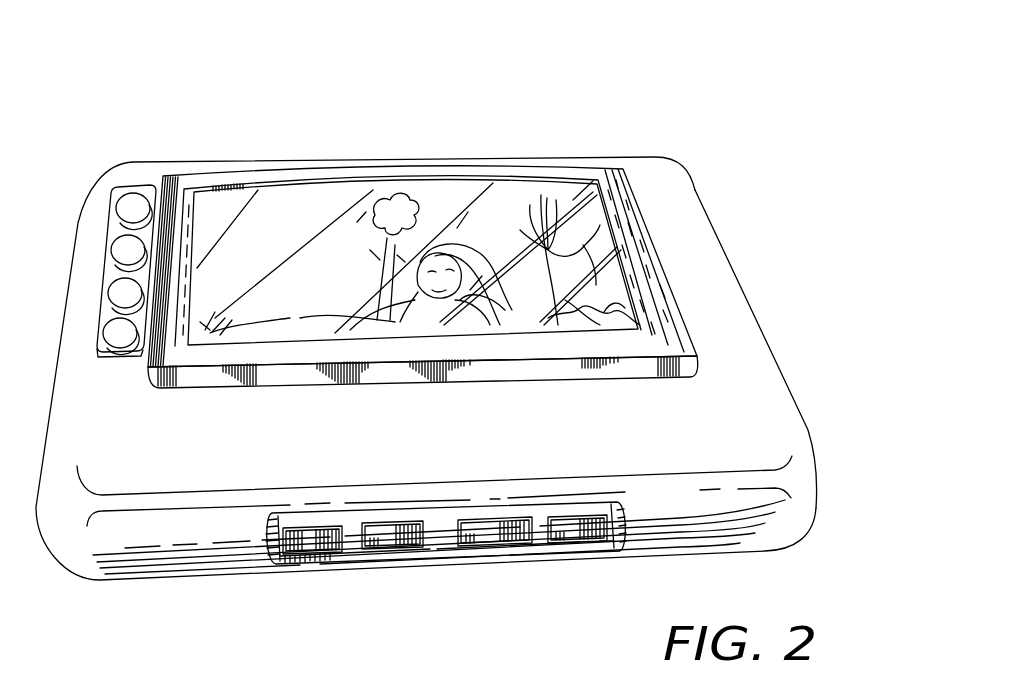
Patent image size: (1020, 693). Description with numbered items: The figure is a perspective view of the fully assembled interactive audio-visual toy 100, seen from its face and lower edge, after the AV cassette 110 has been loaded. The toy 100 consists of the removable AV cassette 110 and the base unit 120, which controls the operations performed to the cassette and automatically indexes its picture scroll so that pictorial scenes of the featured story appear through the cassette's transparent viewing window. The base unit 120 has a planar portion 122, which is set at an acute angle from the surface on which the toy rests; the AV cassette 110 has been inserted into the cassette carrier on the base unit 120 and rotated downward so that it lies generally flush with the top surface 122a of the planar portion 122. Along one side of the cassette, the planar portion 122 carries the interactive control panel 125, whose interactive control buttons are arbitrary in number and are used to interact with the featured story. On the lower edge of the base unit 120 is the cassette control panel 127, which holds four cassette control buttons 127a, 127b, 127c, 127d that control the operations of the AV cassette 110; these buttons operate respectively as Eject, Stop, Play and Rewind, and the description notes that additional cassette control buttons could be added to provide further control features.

The interactive audio-visual toy 100 is at (704, 206).
The AV cassette 110 is at (249, 183).
The base unit 120 is at (755, 307).
The planar portion 122 is at (816, 507).
The top surface 122a is at (738, 382).
The interactive control panel 125 is at (141, 184).
The cassette control panel 127 is at (633, 523).
The cassette control button 127a is at (314, 546).
The cassette control button 127b is at (393, 539).
The cassette control button 127c is at (494, 539).
The cassette control button 127d is at (578, 533).